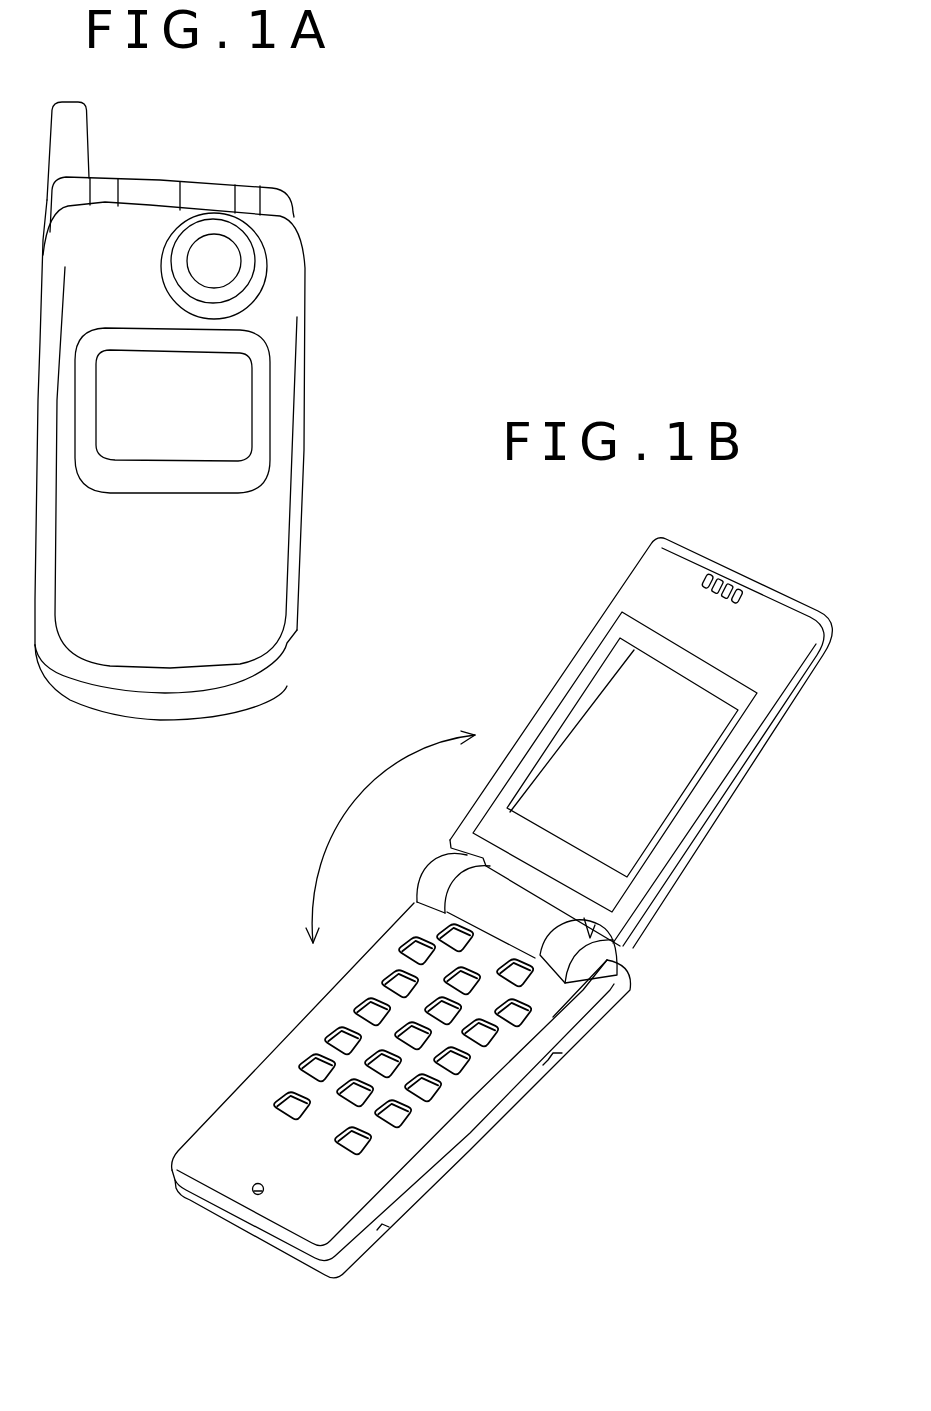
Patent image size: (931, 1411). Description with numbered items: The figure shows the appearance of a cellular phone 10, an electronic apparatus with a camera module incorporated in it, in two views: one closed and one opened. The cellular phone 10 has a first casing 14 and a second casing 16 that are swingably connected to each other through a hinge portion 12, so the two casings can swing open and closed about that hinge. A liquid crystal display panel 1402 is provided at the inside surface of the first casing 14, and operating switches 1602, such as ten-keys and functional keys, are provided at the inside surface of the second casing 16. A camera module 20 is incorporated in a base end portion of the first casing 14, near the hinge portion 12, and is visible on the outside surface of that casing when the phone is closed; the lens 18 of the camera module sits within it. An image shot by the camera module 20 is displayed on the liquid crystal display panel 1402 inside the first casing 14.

In FIG. 1A, the cellular phone 10 is at (355, 198).
In FIG. 1A, the hinge portion 12 is at (222, 186).
In FIG. 1B, the hinge portion 12 is at (513, 918).
In FIG. 1A, the first casing 14 is at (293, 632).
In FIG. 1B, the first casing 14 is at (722, 553).
In FIG. 1A, the second casing 16 is at (283, 693).
In FIG. 1B, the second casing 16 is at (360, 1247).
In FIG. 1A, the camera lens 18 is at (218, 257).
In FIG. 1A, the camera module 20 is at (268, 293).
In FIG. 1B, the liquid crystal display panel 1402 is at (622, 780).
In FIG. 1B, the operating switches 1602 is at (372, 1010).